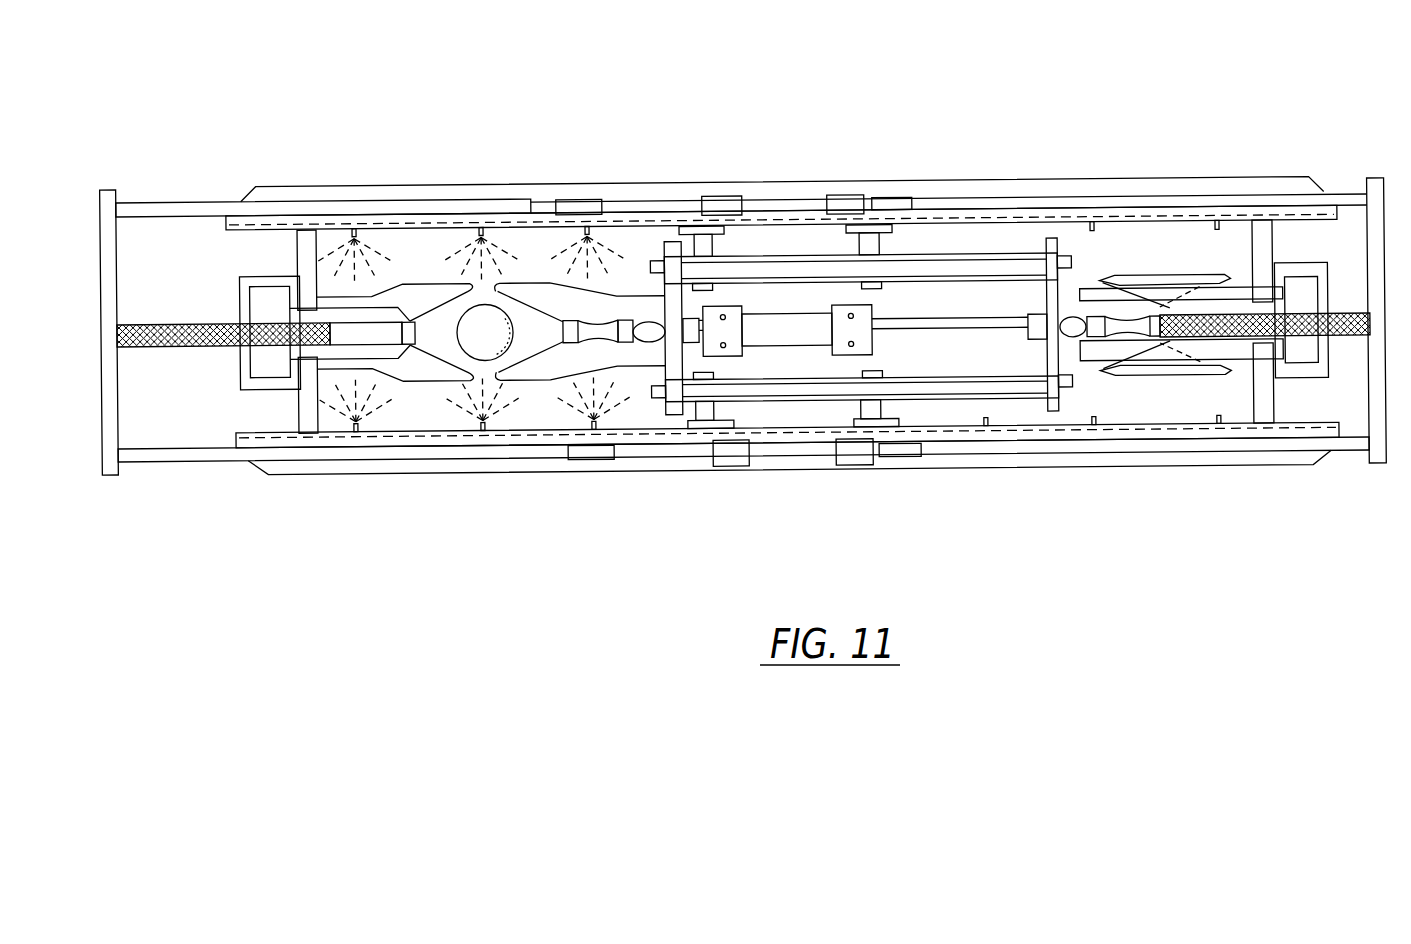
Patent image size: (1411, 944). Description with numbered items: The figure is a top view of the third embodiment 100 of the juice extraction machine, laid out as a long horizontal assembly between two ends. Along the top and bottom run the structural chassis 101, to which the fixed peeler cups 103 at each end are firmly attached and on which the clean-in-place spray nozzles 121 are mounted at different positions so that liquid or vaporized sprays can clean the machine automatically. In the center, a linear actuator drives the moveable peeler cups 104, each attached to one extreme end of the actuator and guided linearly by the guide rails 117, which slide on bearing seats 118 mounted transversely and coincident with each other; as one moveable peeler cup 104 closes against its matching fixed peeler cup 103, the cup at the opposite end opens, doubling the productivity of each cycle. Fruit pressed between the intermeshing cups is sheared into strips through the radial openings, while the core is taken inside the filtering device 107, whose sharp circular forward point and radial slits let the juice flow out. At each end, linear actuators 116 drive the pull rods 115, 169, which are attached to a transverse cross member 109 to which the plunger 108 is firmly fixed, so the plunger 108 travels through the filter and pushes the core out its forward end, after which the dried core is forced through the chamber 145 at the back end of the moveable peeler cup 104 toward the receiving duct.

The third embodiment 100 is at (880, 120).
The structural chassis 101 is at (1290, 183).
The fixed peeler cup 103 is at (390, 293).
The moveable peeler cup 104 is at (617, 296).
The filtering device 107 is at (365, 320).
The plunger 108 is at (198, 341).
The transverse cross member 109 is at (100, 402).
The pull rod 115 is at (482, 208).
The linear actuator 116 is at (706, 196).
The guide rail 117 is at (1003, 258).
The bearing seat 118 is at (882, 244).
The clean-in-place spray nozzle 121 is at (487, 430).
The chamber 145 is at (603, 343).
The pull rod 169 is at (158, 458).